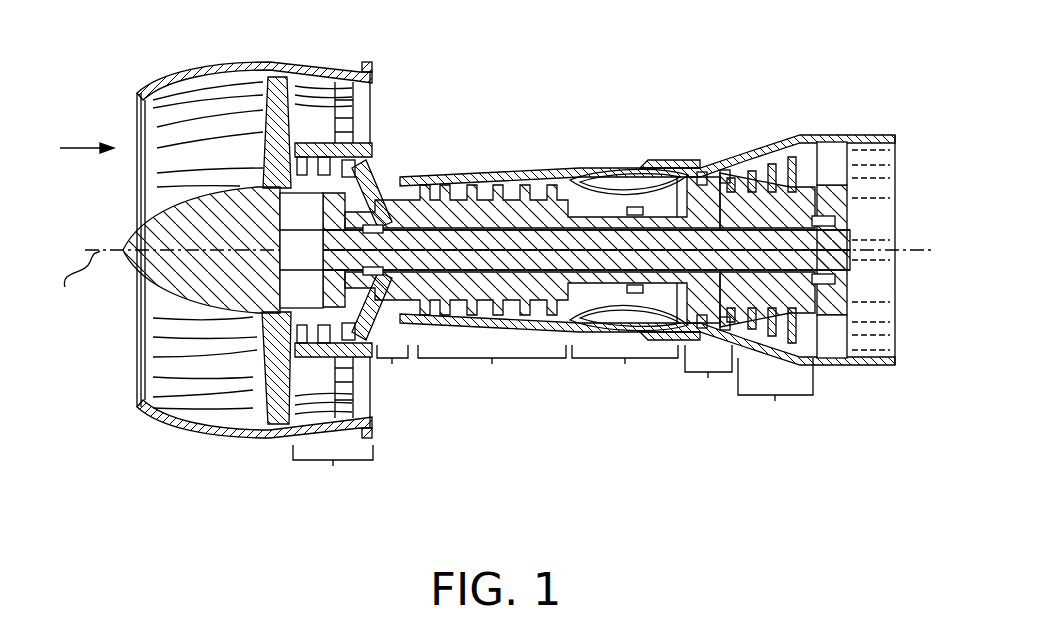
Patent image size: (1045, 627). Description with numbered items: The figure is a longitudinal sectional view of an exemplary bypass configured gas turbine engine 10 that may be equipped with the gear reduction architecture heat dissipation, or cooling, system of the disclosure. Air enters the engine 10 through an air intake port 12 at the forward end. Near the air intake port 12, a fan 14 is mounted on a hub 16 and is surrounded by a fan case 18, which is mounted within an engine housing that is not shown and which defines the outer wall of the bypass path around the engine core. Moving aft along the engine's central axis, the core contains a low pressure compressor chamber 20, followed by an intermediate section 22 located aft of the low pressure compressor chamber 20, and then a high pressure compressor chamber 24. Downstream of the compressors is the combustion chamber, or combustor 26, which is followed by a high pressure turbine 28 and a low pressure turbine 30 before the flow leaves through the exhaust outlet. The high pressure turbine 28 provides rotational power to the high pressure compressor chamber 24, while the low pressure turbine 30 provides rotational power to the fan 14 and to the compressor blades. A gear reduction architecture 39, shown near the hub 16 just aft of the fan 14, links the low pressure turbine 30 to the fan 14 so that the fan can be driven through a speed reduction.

The gas turbine engine 10 is at (866, 26).
The air intake port 12 is at (71, 148).
The fan 14 is at (227, 352).
The hub 16 is at (136, 240).
The fan case 18 is at (253, 67).
The low pressure compressor chamber 20 is at (333, 471).
The intermediate section 22 is at (392, 371).
The high pressure compressor chamber 24 is at (492, 371).
The combustor 26 is at (625, 371).
The high pressure turbine 28 is at (708, 377).
The low pressure turbine 30 is at (775, 395).
The gear reduction architecture 39 is at (362, 210).